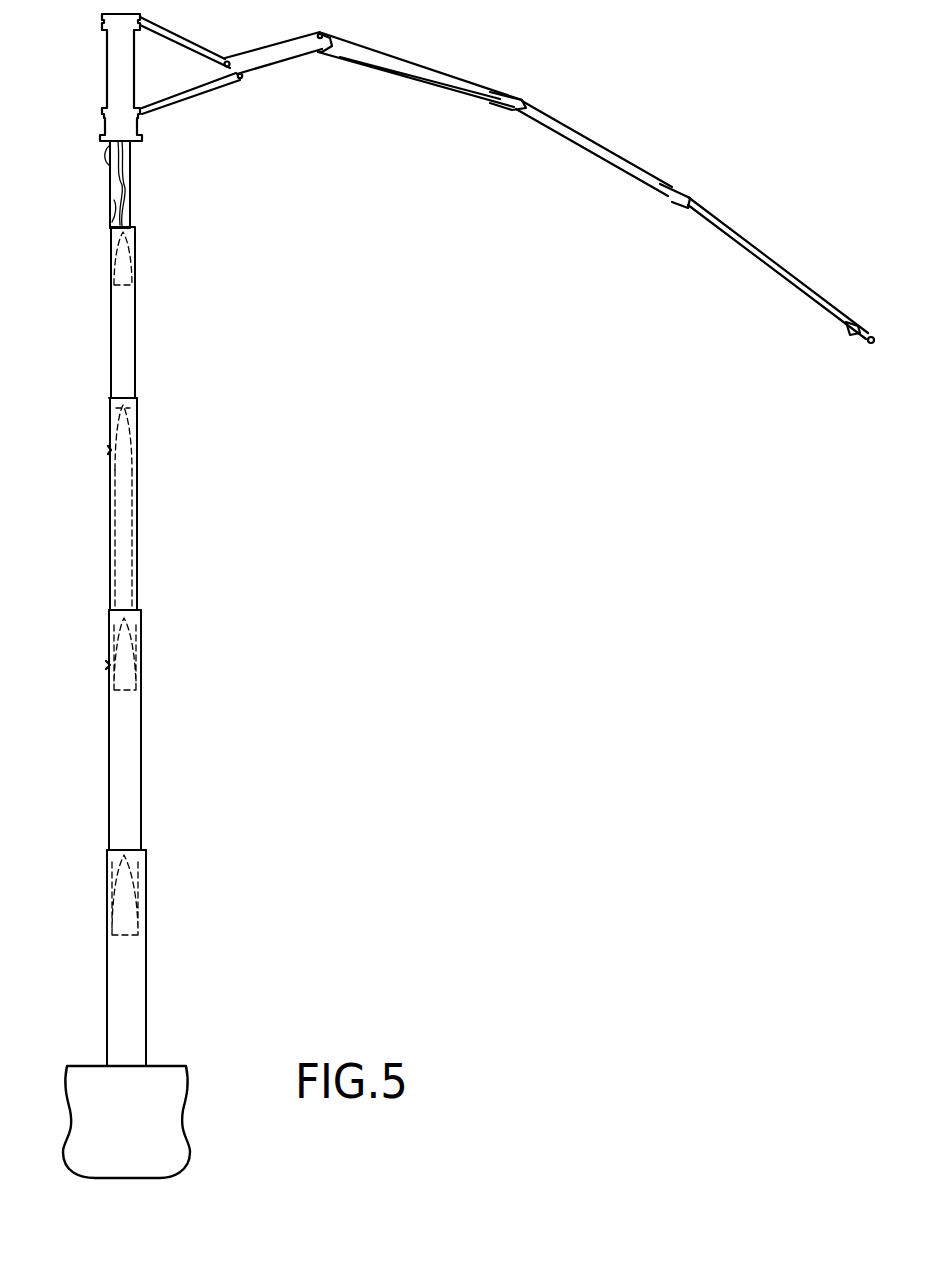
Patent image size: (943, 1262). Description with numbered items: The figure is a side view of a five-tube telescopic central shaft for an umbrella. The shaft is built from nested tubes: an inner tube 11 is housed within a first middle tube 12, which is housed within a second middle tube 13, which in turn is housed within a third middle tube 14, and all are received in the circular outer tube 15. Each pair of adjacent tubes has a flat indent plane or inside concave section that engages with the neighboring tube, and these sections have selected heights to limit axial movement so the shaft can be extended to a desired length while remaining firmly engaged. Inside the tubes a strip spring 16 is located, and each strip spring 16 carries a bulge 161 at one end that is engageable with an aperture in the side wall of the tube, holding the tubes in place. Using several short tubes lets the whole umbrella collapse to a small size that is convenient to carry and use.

The inner tube 11 is at (133, 170).
The first middle tube 12 is at (137, 313).
The second middle tube 13 is at (138, 507).
The third middle tube 14 is at (141, 790).
The outer tube 15 is at (146, 966).
The strip spring 16 is at (140, 405).
The bulge 161 is at (108, 450).